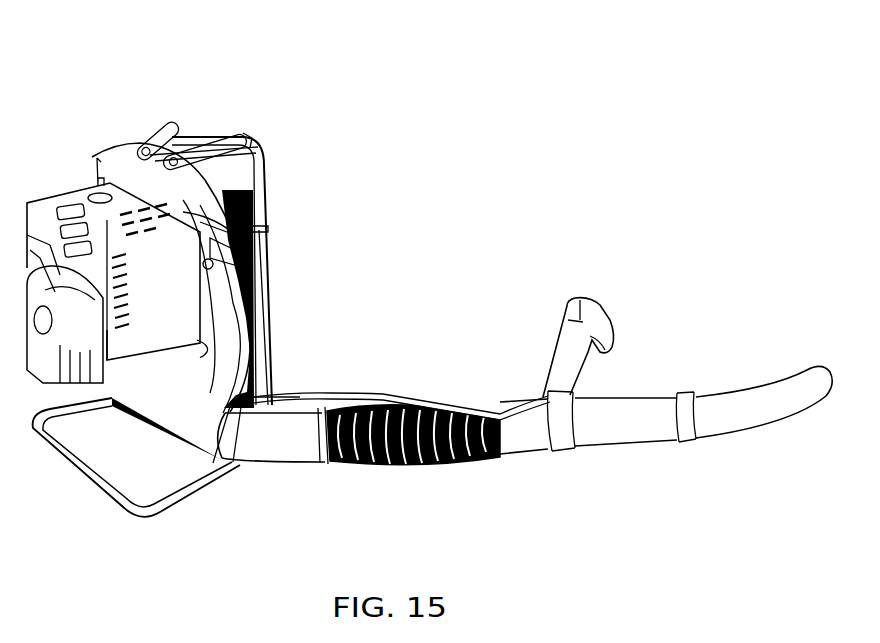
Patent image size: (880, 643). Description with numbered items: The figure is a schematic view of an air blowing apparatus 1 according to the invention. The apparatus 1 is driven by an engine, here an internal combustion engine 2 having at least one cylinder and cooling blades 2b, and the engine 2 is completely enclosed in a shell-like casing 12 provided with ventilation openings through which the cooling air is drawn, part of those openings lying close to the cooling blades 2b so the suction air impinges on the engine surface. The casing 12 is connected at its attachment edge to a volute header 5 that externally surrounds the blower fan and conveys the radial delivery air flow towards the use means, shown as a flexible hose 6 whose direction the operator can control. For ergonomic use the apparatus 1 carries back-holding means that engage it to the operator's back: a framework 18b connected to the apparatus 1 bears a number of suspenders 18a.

The apparatus 1 is at (278, 183).
The internal combustion engine 2 is at (43, 323).
The cooling blades 2b is at (143, 237).
The volute header 5 is at (226, 305).
The flexible hose 6 is at (523, 440).
The casing 12 is at (64, 195).
The suspenders 18a is at (165, 130).
The framework 18b is at (258, 250).